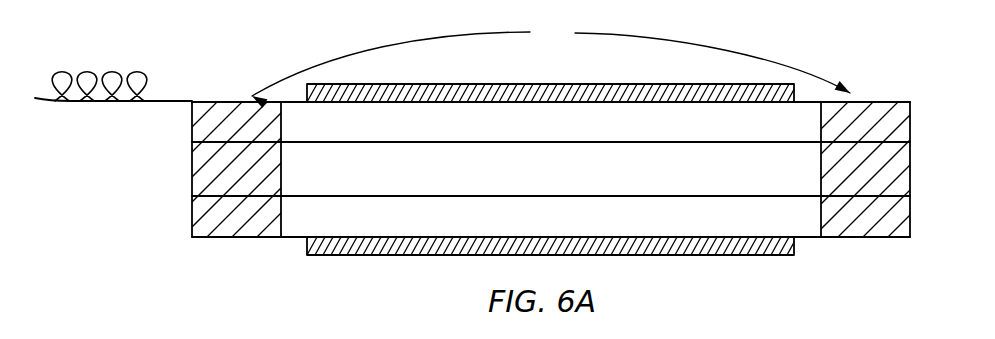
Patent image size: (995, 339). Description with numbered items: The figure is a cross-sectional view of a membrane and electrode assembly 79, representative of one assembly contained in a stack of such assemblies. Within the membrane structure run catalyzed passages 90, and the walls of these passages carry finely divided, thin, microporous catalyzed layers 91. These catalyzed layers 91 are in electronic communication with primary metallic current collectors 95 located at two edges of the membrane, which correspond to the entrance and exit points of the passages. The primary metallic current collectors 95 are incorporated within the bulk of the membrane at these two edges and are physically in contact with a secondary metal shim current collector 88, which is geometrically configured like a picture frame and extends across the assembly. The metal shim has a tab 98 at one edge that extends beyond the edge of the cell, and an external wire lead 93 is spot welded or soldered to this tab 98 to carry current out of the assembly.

The membrane and electrode assembly 79 is at (188, 66).
The secondary metal shim current collector 88 is at (551, 65).
The catalyzed passages 90 is at (551, 183).
The catalyzed layers 91 is at (685, 195).
The external wire lead 93 is at (113, 70).
The primary metallic current collectors 95 is at (210, 219).
The tab 98 is at (170, 104).